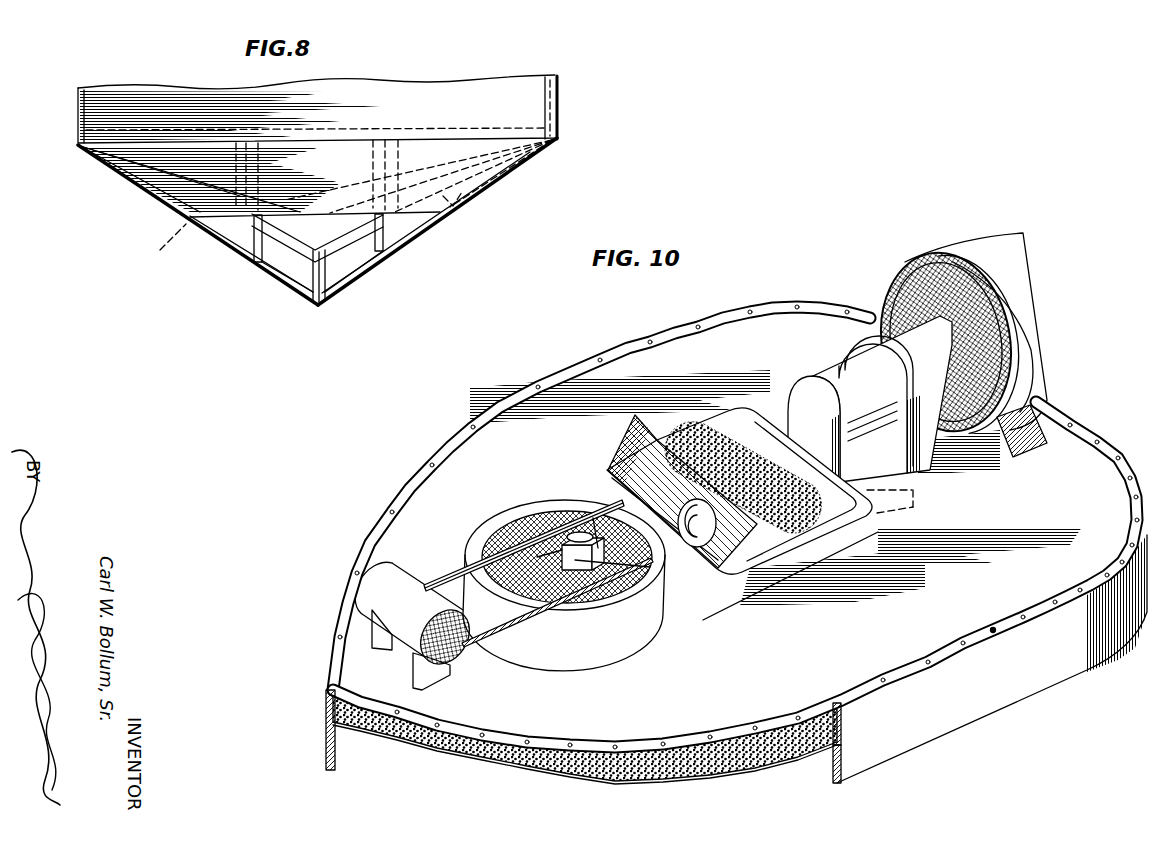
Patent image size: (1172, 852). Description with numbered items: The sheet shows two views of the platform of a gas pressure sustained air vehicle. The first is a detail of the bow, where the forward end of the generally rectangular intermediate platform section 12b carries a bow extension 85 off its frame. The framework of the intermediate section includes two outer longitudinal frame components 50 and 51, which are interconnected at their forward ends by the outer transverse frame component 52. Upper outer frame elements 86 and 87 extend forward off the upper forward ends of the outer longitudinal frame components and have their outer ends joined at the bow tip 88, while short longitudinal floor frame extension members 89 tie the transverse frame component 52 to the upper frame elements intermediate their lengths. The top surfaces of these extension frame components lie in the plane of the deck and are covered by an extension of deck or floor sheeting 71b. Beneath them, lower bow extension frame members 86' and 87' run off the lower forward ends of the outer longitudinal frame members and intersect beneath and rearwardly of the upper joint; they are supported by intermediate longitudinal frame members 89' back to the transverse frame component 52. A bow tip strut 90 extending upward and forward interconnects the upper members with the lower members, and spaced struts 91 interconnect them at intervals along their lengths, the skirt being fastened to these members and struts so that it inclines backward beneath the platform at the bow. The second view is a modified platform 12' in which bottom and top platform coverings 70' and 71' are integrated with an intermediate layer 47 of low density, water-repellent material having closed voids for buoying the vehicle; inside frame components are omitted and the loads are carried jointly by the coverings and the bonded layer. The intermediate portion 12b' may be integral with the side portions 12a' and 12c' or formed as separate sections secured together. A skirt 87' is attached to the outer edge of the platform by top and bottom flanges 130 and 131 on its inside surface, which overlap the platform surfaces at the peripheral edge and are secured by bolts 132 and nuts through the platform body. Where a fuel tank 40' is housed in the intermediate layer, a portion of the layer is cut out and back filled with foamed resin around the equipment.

In FIG. 8, the outer longitudinal frame component 51 is at (83, 110).
In FIG. 8, the outer transverse frame component 52 is at (315, 131).
In FIG. 8, the deck or floor sheeting extension 71b is at (417, 88).
In FIG. 8, the intermediate platform section 12b is at (588, 92).
In FIG. 8, the outer longitudinal frame component 50 is at (550, 102).
In FIG. 8, the bow extension 85 is at (172, 224).
In FIG. 8, the upper outer frame element 86 is at (437, 221).
In FIG. 8, the lower bow extension frame member 86' is at (418, 176).
In FIG. 8, the upper outer frame element 87 is at (198, 225).
In FIG. 8, the lower bow extension frame member 87' is at (238, 254).
In FIG. 10, the lower bow extension frame member 87' is at (1104, 624).
In FIG. 8, the bow tip 88 is at (320, 278).
In FIG. 8, the longitudinal floor frame extension member 89 is at (339, 260).
In FIG. 8, the intermediate longitudinal frame member 89' is at (310, 175).
In FIG. 8, the bow tip strut 90 is at (314, 290).
In FIG. 8, the strut 91 is at (473, 221).
In FIG. 10, the platform 12' is at (740, 527).
In FIG. 10, the side portion of the platform 12a' is at (916, 657).
In FIG. 10, the intermediate portion of the platform 12b' is at (691, 561).
In FIG. 10, the deck surface 12c' is at (716, 433).
In FIG. 10, the fuel tank 40' is at (794, 491).
In FIG. 10, the intermediate layer of low density, water-repellent material 47 is at (614, 762).
In FIG. 10, the bottom platform covering 70' is at (585, 754).
In FIG. 10, the top platform covering 71' is at (585, 747).
In FIG. 10, the top flange 130 is at (833, 705).
In FIG. 10, the bottom flange 131 is at (834, 757).
In FIG. 10, the bolt 132 is at (992, 628).